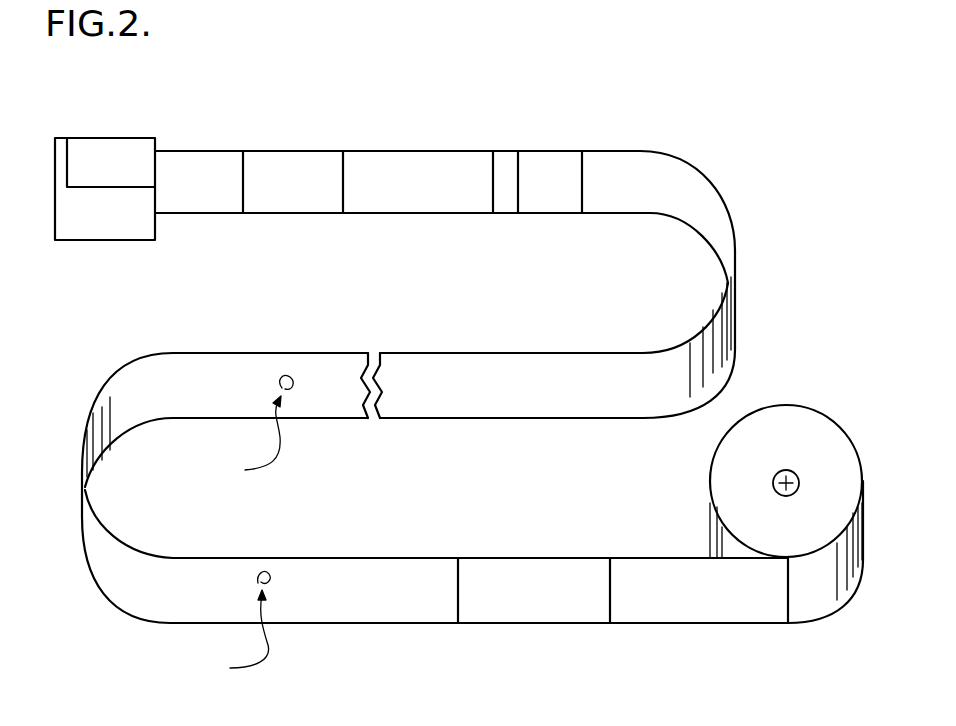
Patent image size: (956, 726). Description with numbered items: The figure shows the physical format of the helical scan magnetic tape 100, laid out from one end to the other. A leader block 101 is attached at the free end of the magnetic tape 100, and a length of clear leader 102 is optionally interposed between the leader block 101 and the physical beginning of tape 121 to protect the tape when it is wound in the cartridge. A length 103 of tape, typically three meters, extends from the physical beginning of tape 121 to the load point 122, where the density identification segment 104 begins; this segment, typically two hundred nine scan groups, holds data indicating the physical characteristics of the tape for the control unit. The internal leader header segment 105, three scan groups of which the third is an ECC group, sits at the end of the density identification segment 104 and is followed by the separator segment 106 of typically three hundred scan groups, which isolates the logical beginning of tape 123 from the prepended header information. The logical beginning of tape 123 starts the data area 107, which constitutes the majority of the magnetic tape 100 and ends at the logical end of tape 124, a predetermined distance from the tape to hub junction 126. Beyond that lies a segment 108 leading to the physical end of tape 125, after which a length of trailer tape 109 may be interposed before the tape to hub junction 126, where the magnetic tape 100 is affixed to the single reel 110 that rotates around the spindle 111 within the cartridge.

The magnetic tape 100 is at (438, 424).
The leader block 101 is at (100, 138).
The clear leader 102 is at (183, 200).
The length of magnetic tape 103 is at (297, 200).
The density identification segment 104 is at (447, 203).
The internal leader header segment 105 is at (508, 215).
The separator segment 106 is at (538, 158).
The data area 107 is at (560, 388).
The end of tape area between logical EOT and physical EOT 108 is at (567, 607).
The trailer tape 109 is at (722, 607).
The single reel 110 is at (737, 442).
The spindle 111 is at (774, 490).
The physical beginning of tape 121 is at (243, 151).
The load point 122 is at (343, 151).
The logical beginning of tape 123 is at (582, 151).
The logical end of tape 124 is at (458, 558).
The physical end of tape 125 is at (608, 558).
The tape to hub junction 126 is at (788, 623).